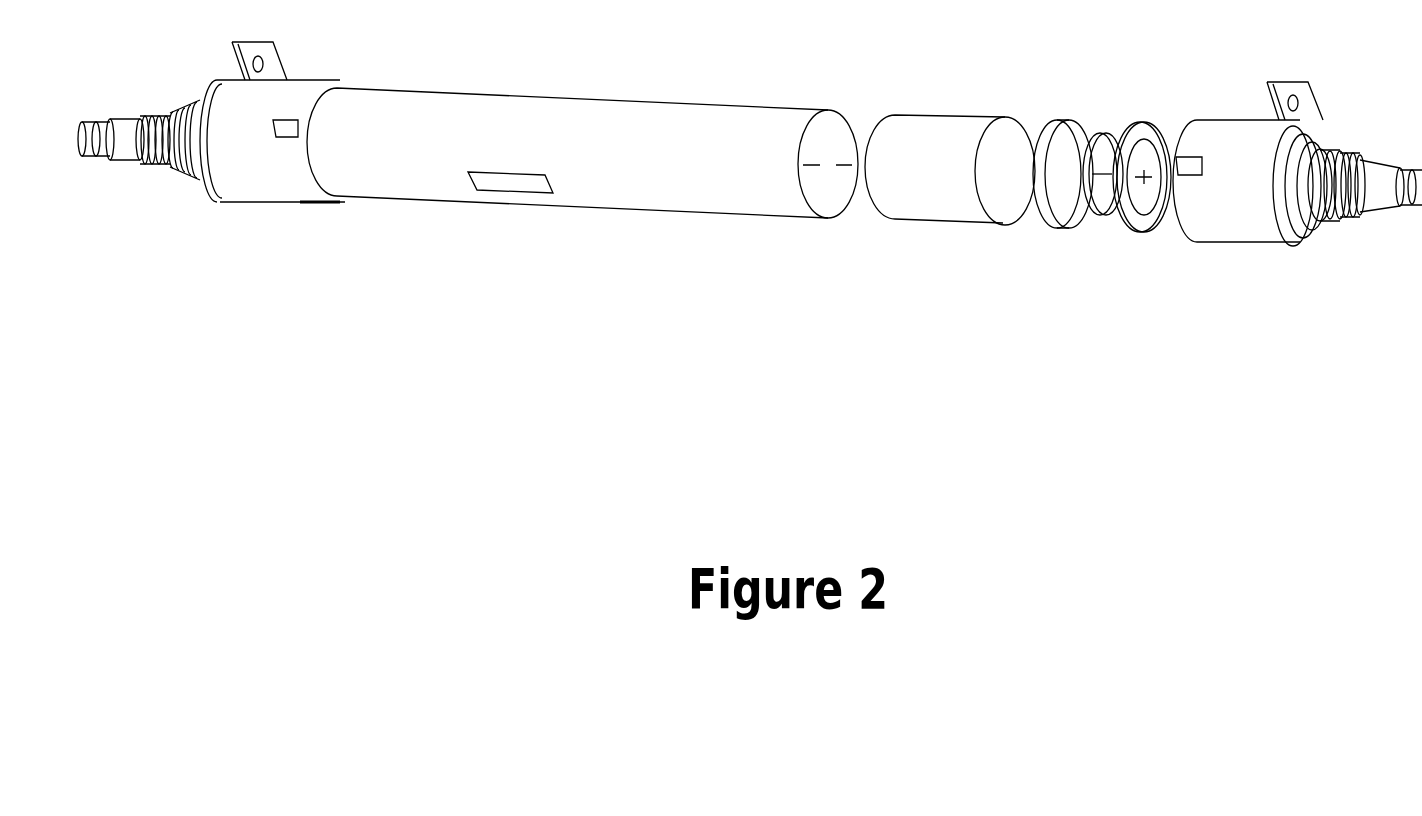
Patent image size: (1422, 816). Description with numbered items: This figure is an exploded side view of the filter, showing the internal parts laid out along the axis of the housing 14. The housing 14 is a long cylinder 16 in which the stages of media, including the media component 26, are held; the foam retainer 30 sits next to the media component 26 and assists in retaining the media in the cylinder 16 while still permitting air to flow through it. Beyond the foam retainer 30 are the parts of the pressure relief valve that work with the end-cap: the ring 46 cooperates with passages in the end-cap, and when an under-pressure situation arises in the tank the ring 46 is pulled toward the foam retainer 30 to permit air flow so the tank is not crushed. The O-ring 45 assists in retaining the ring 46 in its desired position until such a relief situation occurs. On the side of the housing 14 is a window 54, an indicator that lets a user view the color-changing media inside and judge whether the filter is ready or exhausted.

The housing 14 is at (487, 92).
The cylinder 16 is at (792, 118).
The media component 26 is at (962, 117).
The foam retainer 30 is at (1065, 118).
The O-ring 45 is at (1105, 222).
The ring 46 is at (1137, 232).
The window 54 is at (520, 183).